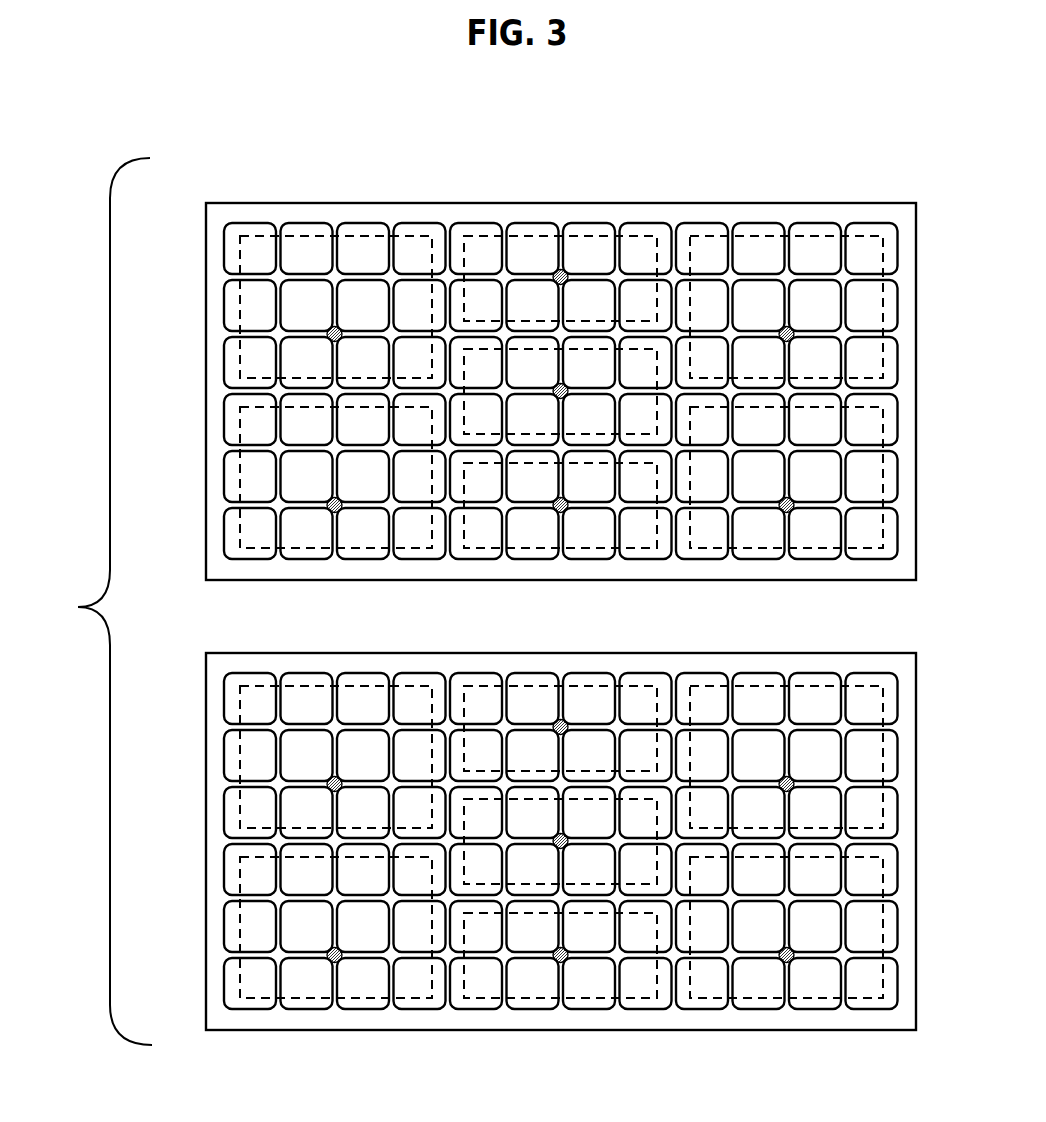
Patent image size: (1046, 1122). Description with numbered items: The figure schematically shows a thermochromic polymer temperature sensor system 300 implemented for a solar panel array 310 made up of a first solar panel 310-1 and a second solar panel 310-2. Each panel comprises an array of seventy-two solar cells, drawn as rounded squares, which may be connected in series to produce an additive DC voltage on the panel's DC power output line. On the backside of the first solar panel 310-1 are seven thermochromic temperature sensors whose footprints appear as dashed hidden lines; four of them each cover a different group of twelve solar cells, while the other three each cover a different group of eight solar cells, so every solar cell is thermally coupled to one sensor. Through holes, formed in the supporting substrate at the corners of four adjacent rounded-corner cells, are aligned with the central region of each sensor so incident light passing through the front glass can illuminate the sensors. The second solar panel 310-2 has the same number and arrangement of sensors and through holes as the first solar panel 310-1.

The thermochromic polymer temperature sensor system 300 is at (529, 93).
The solar panel array 310 is at (78, 607).
The first solar panel 310-1 is at (220, 203).
The second solar panel 310-2 is at (220, 653).